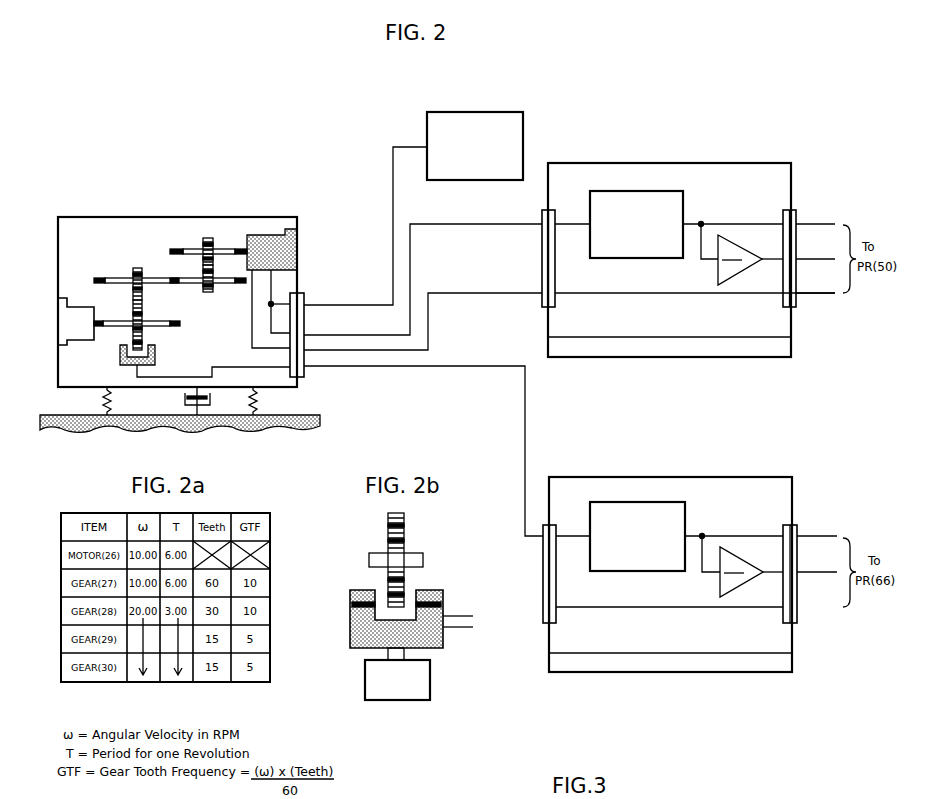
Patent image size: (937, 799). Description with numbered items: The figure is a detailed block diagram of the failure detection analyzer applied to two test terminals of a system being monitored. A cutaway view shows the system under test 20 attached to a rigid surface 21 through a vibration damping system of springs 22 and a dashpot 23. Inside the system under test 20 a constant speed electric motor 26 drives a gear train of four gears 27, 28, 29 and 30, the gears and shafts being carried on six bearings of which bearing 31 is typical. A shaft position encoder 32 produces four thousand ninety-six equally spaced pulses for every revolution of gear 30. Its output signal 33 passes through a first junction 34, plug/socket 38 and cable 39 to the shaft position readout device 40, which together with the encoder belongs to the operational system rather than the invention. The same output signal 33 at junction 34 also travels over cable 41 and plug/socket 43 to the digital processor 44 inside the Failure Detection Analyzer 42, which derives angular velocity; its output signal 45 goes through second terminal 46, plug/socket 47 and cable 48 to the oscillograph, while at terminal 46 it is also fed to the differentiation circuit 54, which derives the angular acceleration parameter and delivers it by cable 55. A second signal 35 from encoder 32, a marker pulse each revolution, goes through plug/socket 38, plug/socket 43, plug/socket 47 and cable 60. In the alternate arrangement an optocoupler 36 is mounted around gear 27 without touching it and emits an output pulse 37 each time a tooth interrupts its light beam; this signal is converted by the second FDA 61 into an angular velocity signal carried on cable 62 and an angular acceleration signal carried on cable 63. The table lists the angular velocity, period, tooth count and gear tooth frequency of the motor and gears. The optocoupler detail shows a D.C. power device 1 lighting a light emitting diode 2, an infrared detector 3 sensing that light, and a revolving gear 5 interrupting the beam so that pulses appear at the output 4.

In FIG. 2b, the D.C. power device 1 is at (432, 690).
In FIG. 2b, the light emitting diode 2 is at (346, 606).
In FIG. 2b, the infrared detector 3 is at (445, 606).
In FIG. 2b, the output 4 is at (418, 619).
In FIG. 2b, the revolving gear 5 is at (408, 540).
In FIG. 2, the system under test 20 is at (107, 215).
In FIG. 2, the rigid surface 21 is at (102, 431).
In FIG. 2, the springs 22 is at (103, 409).
In FIG. 2, the dashpot 23 is at (188, 408).
In FIG. 2, the constant speed electric motor 26 is at (92, 306).
In FIG. 2, the gear 27 is at (132, 322).
In FIG. 2, the gear 28 is at (139, 267).
In FIG. 2, the gear 29 is at (208, 292).
In FIG. 2, the gear 30 is at (207, 239).
In FIG. 2, the bearing 31 is at (102, 277).
In FIG. 2, the shaft position encoder 32 is at (297, 258).
In FIG. 2, the output signal 33 is at (280, 301).
In FIG. 2, the first junction 34 is at (269, 306).
In FIG. 2, the second signal 35 is at (271, 309).
In FIG. 2, the optocoupler 36 is at (126, 358).
In FIG. 2, the output pulse 37 is at (239, 365).
In FIG. 2, the plug/socket 38 is at (305, 294).
In FIG. 2, the cable 39 is at (392, 221).
In FIG. 2, the shaft position readout device 40 is at (484, 110).
In FIG. 2, the cable 41 is at (459, 223).
In FIG. 2, the Failure Detection Analyzer 42 is at (713, 162).
In FIG. 2, the plug/socket 43 is at (542, 211).
In FIG. 2, the digital processor 44 is at (634, 190).
In FIG. 2, the output signal 45 is at (700, 221).
In FIG. 2, the second terminal 46 is at (709, 223).
In FIG. 2, the plug/socket 47 is at (796, 212).
In FIG. 2, the cable 48 is at (816, 215).
In FIG. 2, the differentiation circuit 54 is at (748, 253).
In FIG. 2, the cable 55 is at (817, 251).
In FIG. 2, the cable 60 is at (817, 286).
In FIG. 2, the second FDA 61 is at (653, 476).
In FIG. 2, the cable 62 is at (818, 528).
In FIG. 2, the angular acceleration output 63 is at (819, 563).